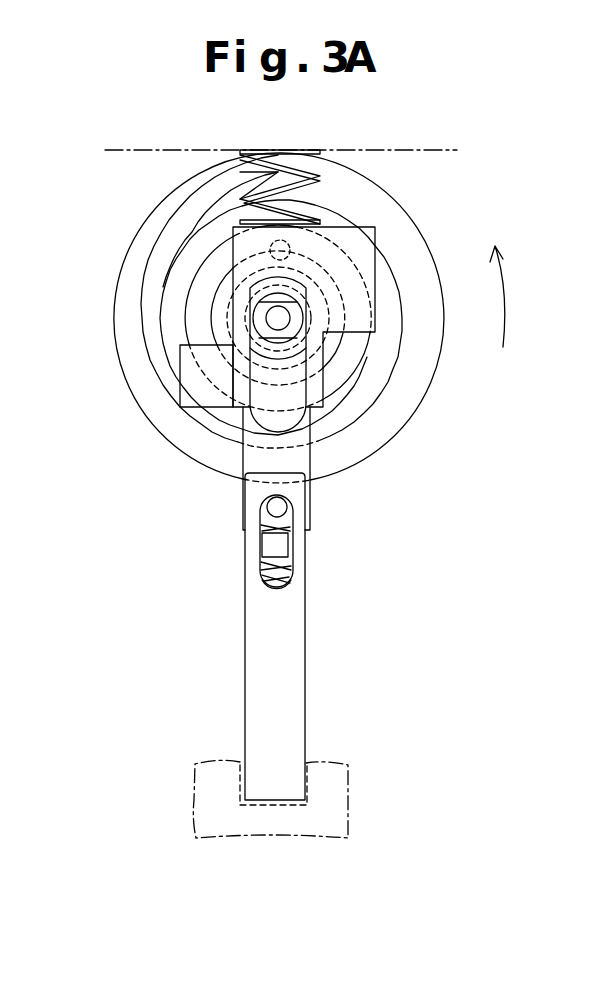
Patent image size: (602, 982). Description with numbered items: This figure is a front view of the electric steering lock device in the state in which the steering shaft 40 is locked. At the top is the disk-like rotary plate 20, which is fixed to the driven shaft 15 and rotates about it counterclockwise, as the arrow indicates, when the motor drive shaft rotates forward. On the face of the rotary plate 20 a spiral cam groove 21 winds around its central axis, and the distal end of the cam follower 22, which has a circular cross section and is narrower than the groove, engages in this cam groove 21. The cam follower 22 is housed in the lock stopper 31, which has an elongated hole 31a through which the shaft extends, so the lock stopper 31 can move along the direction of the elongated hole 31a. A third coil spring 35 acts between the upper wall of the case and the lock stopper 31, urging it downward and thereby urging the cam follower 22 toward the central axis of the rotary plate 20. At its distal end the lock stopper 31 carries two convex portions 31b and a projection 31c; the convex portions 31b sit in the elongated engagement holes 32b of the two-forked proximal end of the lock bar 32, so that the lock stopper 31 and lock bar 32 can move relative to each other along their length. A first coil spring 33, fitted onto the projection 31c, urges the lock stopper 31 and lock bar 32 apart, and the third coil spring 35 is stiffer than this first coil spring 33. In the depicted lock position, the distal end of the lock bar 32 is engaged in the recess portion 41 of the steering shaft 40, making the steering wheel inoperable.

The driven shaft 15 is at (297, 362).
The rotary plate 20 is at (408, 221).
The cam groove 21 is at (184, 234).
The cam follower 22 is at (291, 247).
The lock stopper 31 is at (297, 462).
The elongated hole 31a is at (256, 296).
The convex portion for engagement 31b is at (275, 507).
The projection 31c is at (268, 547).
The lock bar 32 is at (282, 620).
The engagement hole 32b is at (261, 573).
The first coil spring 33 is at (291, 568).
The third coil spring 35 is at (314, 149).
The steering shaft 40 is at (344, 806).
The recess portion 41 is at (303, 772).